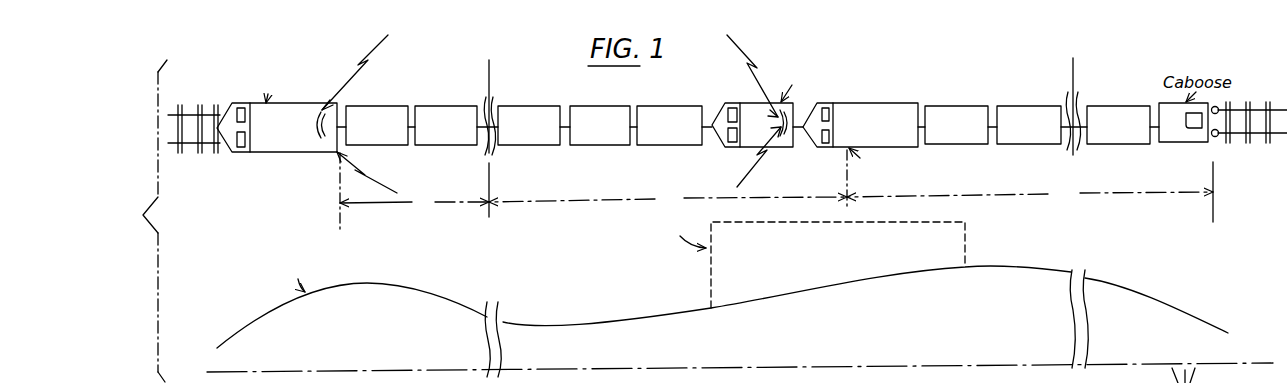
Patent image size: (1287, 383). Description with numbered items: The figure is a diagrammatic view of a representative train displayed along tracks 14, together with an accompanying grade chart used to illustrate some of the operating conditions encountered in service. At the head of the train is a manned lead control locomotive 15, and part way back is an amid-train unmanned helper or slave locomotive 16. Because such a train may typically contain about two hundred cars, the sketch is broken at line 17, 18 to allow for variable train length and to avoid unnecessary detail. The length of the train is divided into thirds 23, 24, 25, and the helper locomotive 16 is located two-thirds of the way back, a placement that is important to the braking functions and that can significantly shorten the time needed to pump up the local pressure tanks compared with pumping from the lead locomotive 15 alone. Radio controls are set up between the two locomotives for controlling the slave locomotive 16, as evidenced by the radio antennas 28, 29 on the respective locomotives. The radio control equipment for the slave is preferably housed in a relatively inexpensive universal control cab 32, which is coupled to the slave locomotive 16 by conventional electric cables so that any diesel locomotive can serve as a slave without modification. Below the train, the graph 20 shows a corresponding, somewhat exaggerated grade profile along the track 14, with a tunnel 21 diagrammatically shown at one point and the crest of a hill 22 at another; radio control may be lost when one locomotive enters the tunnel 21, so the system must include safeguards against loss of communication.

The tracks 14 is at (197, 153).
The lead control locomotive 15 is at (262, 145).
The slave locomotive 16 is at (868, 108).
The break line 17 is at (489, 70).
The break line 18 is at (1073, 72).
The graph 20 is at (798, 340).
The tunnel 21 is at (709, 266).
The crest of a hill 22 is at (364, 282).
The first third of the train 23 is at (455, 203).
The second third of the train 24 is at (547, 201).
The third third of the train 25 is at (995, 195).
The radio antenna 28 is at (313, 124).
The radio antenna 29 is at (780, 122).
The control cab 32 is at (737, 103).